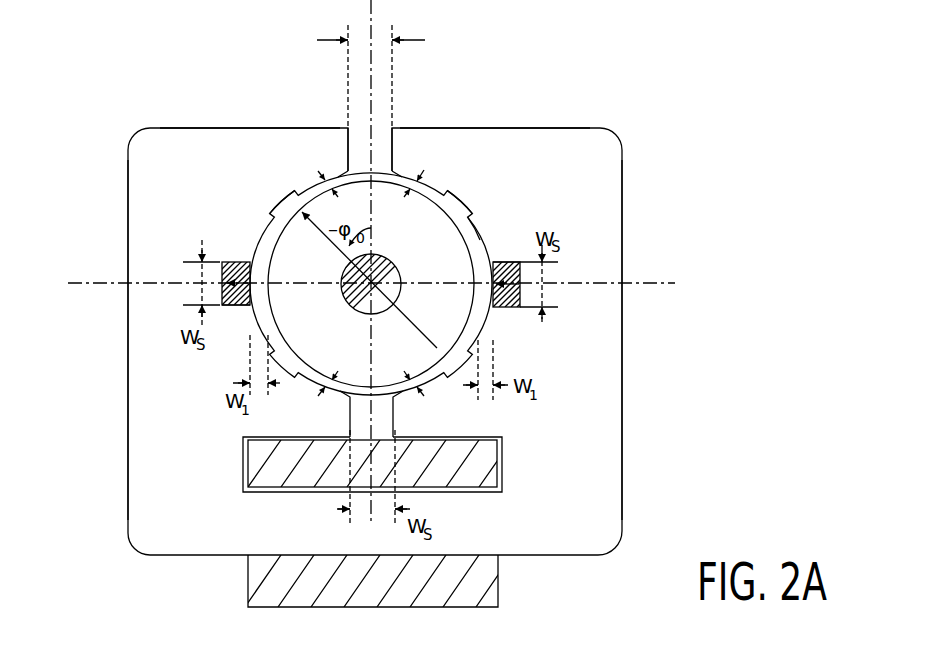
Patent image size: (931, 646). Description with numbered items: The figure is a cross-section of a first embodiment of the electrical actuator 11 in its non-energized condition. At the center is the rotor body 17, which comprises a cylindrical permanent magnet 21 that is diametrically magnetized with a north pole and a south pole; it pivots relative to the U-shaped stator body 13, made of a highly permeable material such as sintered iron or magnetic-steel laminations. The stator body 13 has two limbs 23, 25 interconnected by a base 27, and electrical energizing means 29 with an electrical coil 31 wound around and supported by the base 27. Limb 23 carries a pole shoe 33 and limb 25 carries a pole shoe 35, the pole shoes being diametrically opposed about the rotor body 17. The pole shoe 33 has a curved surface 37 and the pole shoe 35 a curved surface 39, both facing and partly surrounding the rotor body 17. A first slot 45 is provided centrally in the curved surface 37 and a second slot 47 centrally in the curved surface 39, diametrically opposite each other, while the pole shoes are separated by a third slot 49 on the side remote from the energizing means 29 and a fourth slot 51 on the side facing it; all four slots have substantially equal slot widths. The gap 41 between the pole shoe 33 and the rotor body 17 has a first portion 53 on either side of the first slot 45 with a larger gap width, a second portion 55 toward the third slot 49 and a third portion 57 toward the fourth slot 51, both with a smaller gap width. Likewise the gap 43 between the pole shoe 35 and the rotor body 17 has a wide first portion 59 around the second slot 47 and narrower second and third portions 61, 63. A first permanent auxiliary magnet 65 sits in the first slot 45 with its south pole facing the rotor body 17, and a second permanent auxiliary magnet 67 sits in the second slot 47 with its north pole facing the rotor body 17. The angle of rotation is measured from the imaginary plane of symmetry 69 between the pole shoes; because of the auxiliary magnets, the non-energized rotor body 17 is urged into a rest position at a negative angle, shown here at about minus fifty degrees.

The actuator 11 is at (108, 558).
The stator body 13 is at (588, 422).
The rotor body 17 is at (484, 294).
The cylindrical permanent magnet 21 is at (329, 284).
The limb 23 is at (150, 307).
The limb 25 is at (608, 258).
The base 27 is at (290, 520).
The electrical energizing means 29 is at (409, 581).
The electrical coil 31 is at (497, 575).
The pole shoe 33 is at (223, 155).
The pole shoe 35 is at (560, 205).
The curved surface 37 is at (262, 226).
The curved surface 39 is at (488, 330).
The gap 41 is at (273, 210).
The gap 43 is at (483, 242).
The first slot 45 is at (220, 270).
The second slot 47 is at (523, 292).
The third slot 49 is at (380, 150).
The fourth slot 51 is at (352, 416).
The first portion 53 is at (273, 237).
The second portion 55 is at (320, 180).
The third portion 57 is at (307, 357).
The first portion 59 is at (471, 215).
The second portion 61 is at (408, 173).
The third portion 63 is at (410, 392).
The first permanent auxiliary magnet 65 is at (233, 307).
The second permanent auxiliary magnet 67 is at (493, 270).
The imaginary plane of symmetry 69 is at (368, 7).